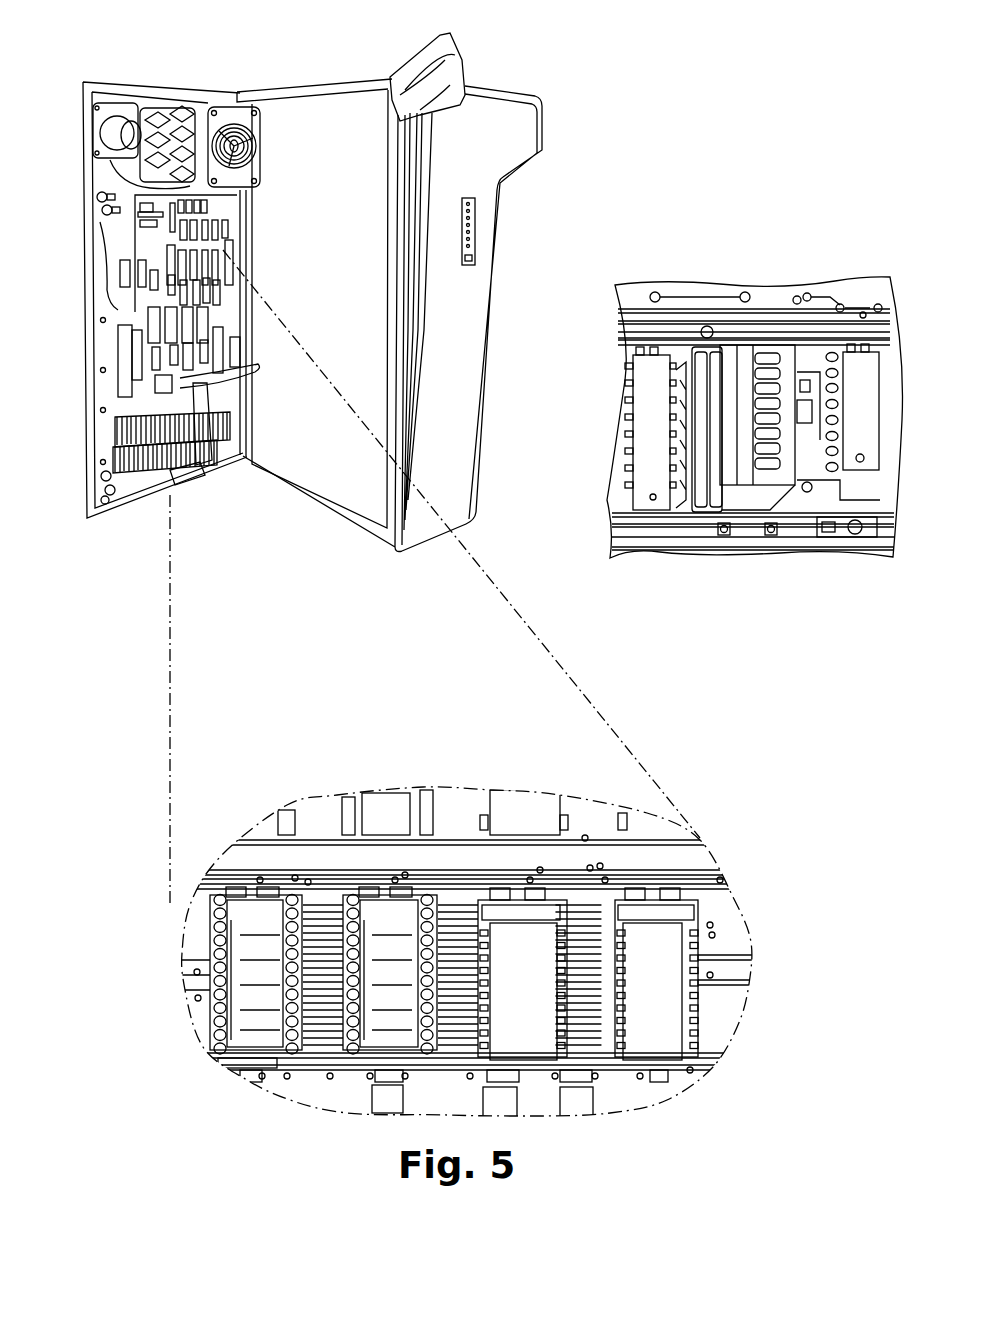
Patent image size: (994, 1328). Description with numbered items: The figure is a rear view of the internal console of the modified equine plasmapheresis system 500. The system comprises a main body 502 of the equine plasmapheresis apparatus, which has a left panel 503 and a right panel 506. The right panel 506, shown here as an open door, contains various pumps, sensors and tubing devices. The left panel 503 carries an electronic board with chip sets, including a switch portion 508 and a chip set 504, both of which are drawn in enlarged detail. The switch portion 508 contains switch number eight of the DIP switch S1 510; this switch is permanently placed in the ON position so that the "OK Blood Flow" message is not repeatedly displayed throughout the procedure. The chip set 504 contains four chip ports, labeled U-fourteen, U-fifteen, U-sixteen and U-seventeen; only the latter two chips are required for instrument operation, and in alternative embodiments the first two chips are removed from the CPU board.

The modified equine plasmapheresis system 500 is at (720, 72).
The main body 502 is at (289, 71).
The left panel 503 is at (133, 512).
The chip set 504 is at (157, 283).
The right panel 506 is at (349, 299).
The switch portion 508 is at (774, 572).
The DIP switch S1 510 is at (747, 353).